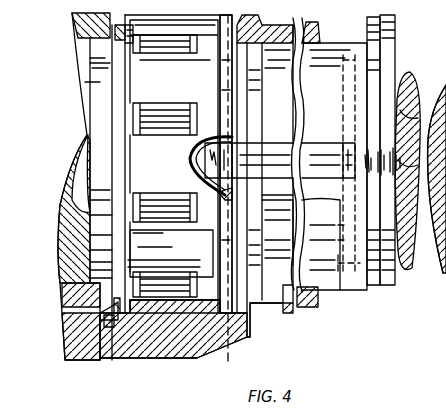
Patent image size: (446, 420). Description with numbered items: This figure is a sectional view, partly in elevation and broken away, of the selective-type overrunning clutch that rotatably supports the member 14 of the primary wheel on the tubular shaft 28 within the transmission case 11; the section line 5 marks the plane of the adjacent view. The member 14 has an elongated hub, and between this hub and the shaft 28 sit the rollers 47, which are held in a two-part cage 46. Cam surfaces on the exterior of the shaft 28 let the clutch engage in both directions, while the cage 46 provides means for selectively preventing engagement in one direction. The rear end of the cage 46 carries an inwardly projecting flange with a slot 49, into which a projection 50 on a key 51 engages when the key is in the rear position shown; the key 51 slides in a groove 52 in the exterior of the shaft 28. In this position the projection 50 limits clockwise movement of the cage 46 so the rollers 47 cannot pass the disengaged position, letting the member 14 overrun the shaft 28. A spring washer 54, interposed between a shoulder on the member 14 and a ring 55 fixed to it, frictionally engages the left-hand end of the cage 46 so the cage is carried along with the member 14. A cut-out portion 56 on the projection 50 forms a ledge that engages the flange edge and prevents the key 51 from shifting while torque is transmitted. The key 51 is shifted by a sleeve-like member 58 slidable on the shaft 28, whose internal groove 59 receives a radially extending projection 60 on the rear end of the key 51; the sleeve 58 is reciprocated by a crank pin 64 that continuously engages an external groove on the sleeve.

The section line 5- 5 is at (226, 5).
The transmission case 11 is at (127, 345).
The member of the primary wheel 14 is at (175, 350).
The tubular shaft 28 is at (400, 280).
The cage 46 is at (143, 72).
The rollers 47 is at (147, 115).
The slot 49 is at (222, 196).
The projection 50 is at (205, 172).
The key 51 is at (323, 178).
The groove 52 is at (368, 172).
The spring washer 54 is at (100, 318).
The ring 55 is at (64, 352).
The cut-out portion 56 is at (228, 135).
The sleeve-like member 58 is at (330, 290).
The internal groove 59 is at (342, 93).
The radially extending projection 60 is at (337, 137).
The crank pin 64 is at (372, 285).